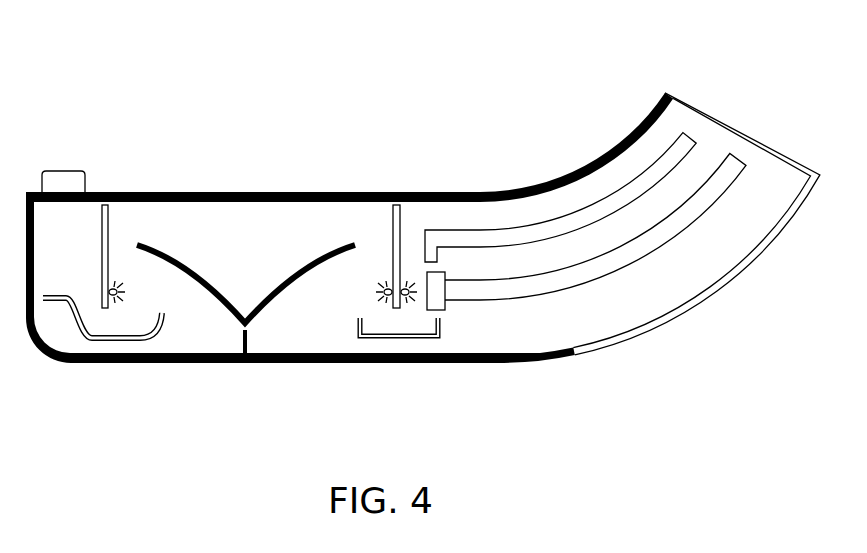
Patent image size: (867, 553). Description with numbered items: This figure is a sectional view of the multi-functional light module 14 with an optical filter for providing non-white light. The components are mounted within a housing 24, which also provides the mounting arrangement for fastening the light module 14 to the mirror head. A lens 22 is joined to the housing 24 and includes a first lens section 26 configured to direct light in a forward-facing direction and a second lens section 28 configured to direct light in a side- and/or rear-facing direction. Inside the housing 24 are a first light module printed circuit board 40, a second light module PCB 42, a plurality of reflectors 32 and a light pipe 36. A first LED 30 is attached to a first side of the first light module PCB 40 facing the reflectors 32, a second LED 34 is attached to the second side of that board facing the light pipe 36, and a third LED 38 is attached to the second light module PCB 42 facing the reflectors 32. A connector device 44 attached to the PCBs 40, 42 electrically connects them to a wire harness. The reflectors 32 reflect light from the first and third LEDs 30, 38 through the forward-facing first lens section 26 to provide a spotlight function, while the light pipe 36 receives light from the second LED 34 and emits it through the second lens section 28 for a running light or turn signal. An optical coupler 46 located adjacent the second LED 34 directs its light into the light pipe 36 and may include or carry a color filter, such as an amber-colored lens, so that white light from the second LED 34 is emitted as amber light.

The light module 14 is at (593, 66).
The lens 22 is at (372, 362).
The housing 24 is at (243, 232).
The first lens section 26 is at (142, 363).
The second lens section 28 is at (752, 140).
The first light emitting diode 30 is at (388, 286).
The reflectors 32 is at (207, 298).
The second LED 34 is at (406, 286).
The light pipe 36 is at (598, 282).
The third LED 38 is at (118, 285).
The first light module printed circuit board 40 is at (398, 205).
The second light module PCB 42 is at (106, 205).
The connector device 44 is at (63, 180).
The optical coupler 46 is at (432, 312).